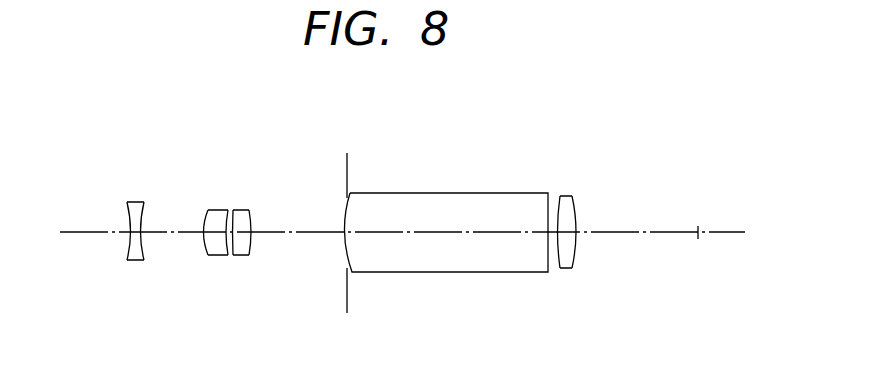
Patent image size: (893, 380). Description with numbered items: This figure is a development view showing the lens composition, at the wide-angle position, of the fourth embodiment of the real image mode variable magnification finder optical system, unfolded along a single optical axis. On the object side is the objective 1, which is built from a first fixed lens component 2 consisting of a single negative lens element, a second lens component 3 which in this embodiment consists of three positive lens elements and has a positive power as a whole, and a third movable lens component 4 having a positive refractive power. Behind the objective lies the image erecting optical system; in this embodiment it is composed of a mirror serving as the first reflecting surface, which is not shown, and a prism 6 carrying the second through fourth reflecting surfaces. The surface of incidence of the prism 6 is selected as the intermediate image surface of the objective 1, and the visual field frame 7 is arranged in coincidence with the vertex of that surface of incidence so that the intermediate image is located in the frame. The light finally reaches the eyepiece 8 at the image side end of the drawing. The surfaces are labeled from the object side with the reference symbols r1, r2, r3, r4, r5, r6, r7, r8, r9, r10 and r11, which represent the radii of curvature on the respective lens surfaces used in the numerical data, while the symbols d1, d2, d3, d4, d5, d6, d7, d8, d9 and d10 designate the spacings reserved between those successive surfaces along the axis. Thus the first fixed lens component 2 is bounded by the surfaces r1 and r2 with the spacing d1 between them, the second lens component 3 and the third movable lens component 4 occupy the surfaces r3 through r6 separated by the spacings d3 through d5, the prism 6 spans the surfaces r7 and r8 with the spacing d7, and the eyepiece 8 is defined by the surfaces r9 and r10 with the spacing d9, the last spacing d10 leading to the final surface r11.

The objective 1 is at (262, 145).
The first fixed lens component 2 is at (137, 261).
The second lens component 3 is at (217, 257).
The third movable lens component 4 is at (246, 257).
The prism 6 is at (467, 193).
The visual field frame 7 is at (346, 162).
The eyepiece 8 is at (578, 197).
The radius of curvature r1 is at (128, 203).
The radius of curvature r2 is at (145, 203).
The radius of curvature r3 is at (207, 214).
The radius of curvature r4 is at (229, 212).
The radius of curvature r5 is at (235, 211).
The radius of curvature r6 is at (250, 212).
The radius of curvature r7 is at (351, 194).
The radius of curvature r8 is at (548, 194).
The radius of curvature r9 is at (560, 197).
The radius of curvature r10 is at (575, 197).
The radius of curvature r11 is at (696, 230).
The airspace d1 is at (133, 261).
The airspace d2 is at (177, 234).
The airspace d3 is at (213, 257).
The airspace d4 is at (231, 257).
The airspace d5 is at (252, 257).
The airspace d6 is at (305, 234).
The airspace d7 is at (448, 234).
The airspace d8 is at (554, 234).
The airspace d9 is at (573, 234).
The airspace d10 is at (643, 234).